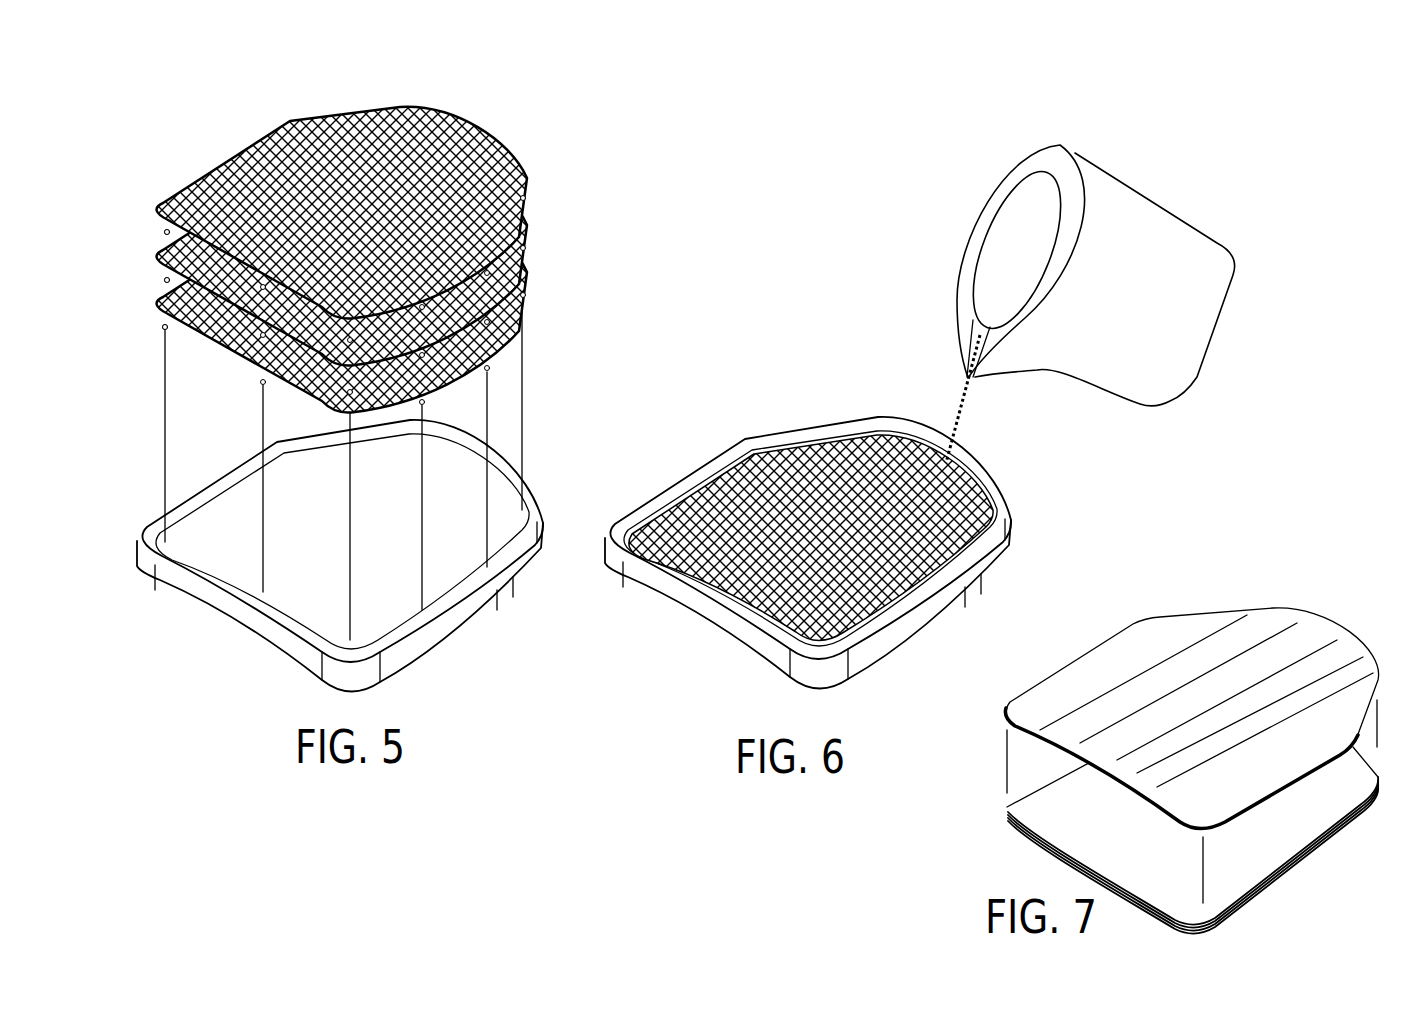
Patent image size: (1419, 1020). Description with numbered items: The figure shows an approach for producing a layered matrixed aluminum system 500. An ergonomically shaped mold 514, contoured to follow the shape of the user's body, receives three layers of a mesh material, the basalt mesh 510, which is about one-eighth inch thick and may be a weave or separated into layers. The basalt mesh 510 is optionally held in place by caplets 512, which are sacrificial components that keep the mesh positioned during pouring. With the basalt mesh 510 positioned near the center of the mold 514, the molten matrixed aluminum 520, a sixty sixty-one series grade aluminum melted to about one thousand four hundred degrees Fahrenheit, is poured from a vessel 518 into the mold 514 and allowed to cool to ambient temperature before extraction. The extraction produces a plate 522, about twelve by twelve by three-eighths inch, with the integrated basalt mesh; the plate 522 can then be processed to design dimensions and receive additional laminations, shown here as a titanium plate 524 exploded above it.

In FIG. 5, the filter assembly 500 is at (395, 399).
In FIG. 5, the basalt mesh 510 is at (523, 273).
In FIG. 6, the basalt mesh 510 is at (873, 538).
In FIG. 5, the caplets 512 is at (163, 327).
In FIG. 5, the mold 514 is at (532, 478).
In FIG. 6, the mold 514 is at (808, 517).
In FIG. 6, the vessel 518 is at (960, 267).
In FIG. 6, the matrixed aluminum 520 is at (946, 405).
In FIG. 7, the plate 522 is at (1057, 810).
In FIG. 7, the titanium plate 524 is at (1173, 627).